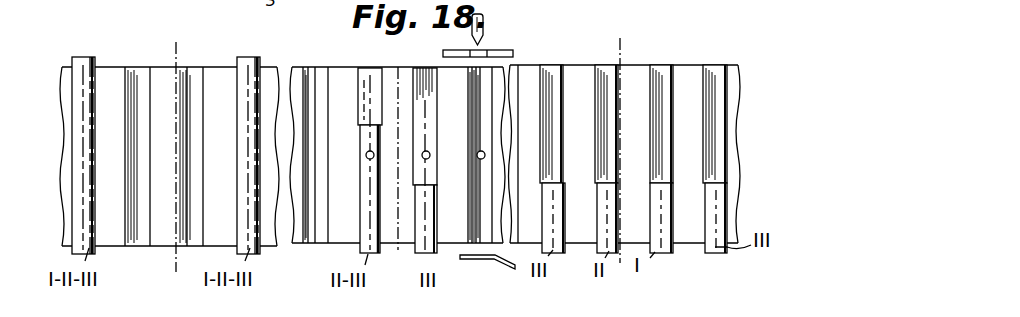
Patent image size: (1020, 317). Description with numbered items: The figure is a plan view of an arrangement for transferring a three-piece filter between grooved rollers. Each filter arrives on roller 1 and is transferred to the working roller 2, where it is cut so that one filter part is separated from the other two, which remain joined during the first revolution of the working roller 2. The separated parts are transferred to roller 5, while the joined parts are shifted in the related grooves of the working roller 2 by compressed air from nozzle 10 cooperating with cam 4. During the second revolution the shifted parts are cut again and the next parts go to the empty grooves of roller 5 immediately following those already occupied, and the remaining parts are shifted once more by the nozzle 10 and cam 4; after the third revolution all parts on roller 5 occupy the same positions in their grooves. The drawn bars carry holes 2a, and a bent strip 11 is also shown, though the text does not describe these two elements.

The roller 1 is at (165, 237).
The working roller 2 is at (351, 68).
The holes in bars 2a is at (366, 157).
The cam 4 is at (503, 51).
The roller 5 is at (583, 70).
The nozzle 10 is at (484, 25).
The bent strip 11 is at (493, 260).